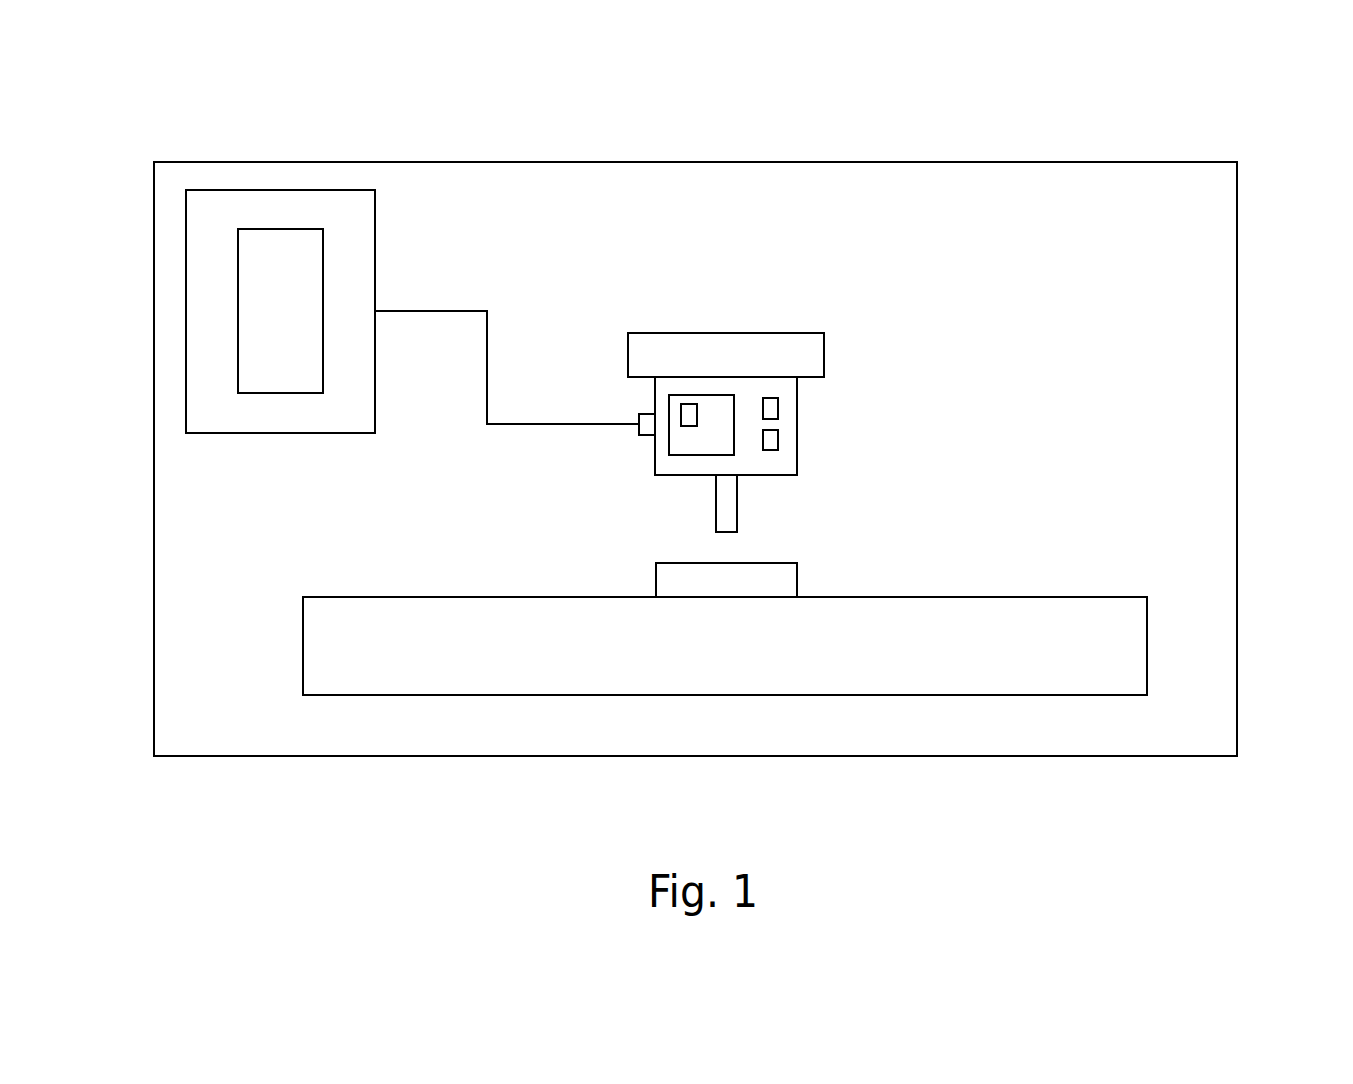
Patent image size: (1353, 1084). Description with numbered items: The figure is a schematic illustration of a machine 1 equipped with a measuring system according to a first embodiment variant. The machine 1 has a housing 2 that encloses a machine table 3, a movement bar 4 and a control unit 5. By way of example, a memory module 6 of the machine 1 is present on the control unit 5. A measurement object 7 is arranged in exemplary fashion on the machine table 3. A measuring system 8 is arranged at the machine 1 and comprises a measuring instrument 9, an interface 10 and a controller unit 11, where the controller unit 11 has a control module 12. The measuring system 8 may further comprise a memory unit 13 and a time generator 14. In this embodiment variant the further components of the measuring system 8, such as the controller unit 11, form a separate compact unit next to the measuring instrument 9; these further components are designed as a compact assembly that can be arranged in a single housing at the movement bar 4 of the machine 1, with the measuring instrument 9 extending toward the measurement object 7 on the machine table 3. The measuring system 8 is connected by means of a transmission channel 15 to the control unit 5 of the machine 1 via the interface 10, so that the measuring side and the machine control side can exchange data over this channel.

The machine 1 is at (147, 796).
The housing 2 is at (1237, 375).
The machine table 3 is at (487, 660).
The movement bar 4 is at (824, 353).
The control unit 5 is at (186, 405).
The memory module 6 is at (237, 318).
The measurement object 7 is at (753, 585).
The measuring system 8 is at (830, 402).
The measuring instrument 9 is at (713, 508).
The interface 10 is at (639, 414).
The controller unit 11 is at (715, 395).
The control module 12 is at (687, 403).
The memory unit 13 is at (765, 398).
The time generator 14 is at (778, 440).
The transmission channel 15 is at (416, 311).